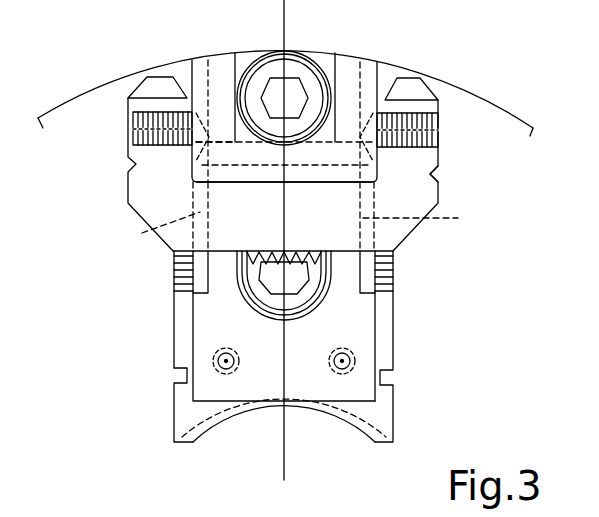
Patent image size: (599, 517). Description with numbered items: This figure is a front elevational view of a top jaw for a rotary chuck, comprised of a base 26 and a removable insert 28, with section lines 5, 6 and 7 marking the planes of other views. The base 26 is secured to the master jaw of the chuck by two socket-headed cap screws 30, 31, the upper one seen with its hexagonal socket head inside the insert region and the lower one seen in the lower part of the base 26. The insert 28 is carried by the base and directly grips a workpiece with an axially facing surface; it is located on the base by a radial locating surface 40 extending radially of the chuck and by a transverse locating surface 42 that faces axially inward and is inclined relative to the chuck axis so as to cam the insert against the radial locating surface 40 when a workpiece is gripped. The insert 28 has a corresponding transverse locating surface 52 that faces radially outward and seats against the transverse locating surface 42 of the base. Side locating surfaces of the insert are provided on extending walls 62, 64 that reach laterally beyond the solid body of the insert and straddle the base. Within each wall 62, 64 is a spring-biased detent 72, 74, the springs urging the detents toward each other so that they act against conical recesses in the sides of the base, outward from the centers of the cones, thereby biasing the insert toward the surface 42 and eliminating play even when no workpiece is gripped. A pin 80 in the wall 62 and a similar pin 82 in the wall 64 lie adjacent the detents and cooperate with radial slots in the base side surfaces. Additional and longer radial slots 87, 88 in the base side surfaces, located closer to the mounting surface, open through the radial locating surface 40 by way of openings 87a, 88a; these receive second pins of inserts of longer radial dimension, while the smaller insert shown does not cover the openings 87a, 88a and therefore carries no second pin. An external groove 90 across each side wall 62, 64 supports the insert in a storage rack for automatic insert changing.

The section line 5- 5 is at (298, 8).
The section line 6- 6 is at (210, 280).
The section line 7- 7 is at (275, 33).
The base 26 is at (388, 348).
The removable insert 28 is at (260, 227).
The socket-headed cap screw 30 is at (257, 88).
The socket-headed cap screw 31 is at (263, 298).
The radial locating surface 40 is at (205, 338).
The transverse locating surface 42 is at (303, 183).
The transverse locating surface of insert 52 is at (257, 182).
The extending wall 62 is at (140, 155).
The extending wall 64 is at (432, 193).
The spring-biased detent 72 is at (145, 90).
The spring-biased detent 74 is at (417, 90).
The pin 80 is at (201, 115).
The pin 82 is at (365, 135).
The radial slot 87 is at (157, 228).
The radial slot 88 is at (428, 218).
The opening 87a is at (203, 290).
The opening 88a is at (372, 298).
The external groove 90 is at (436, 176).